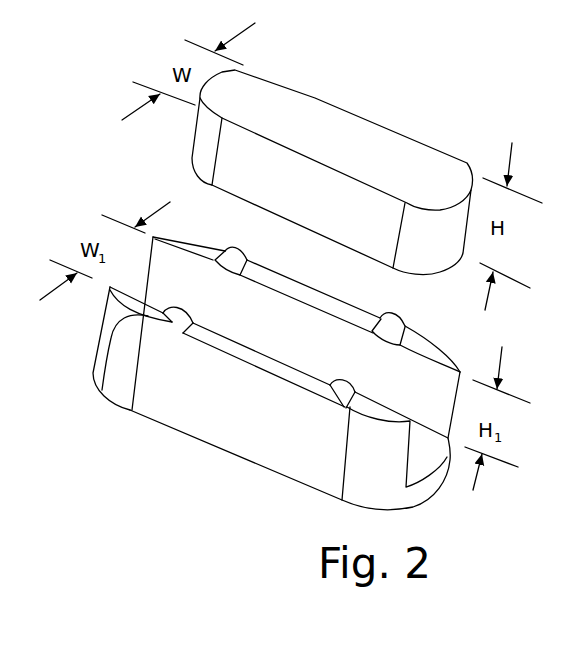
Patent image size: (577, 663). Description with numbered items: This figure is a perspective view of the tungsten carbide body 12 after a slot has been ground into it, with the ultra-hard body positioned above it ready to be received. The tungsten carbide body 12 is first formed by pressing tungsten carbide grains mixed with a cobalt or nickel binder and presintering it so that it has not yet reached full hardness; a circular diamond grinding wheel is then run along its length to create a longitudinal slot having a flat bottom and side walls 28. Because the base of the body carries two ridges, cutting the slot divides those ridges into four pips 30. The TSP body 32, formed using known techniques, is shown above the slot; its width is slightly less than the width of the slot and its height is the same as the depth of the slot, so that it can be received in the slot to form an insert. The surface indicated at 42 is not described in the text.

The tungsten carbide body 12 is at (254, 363).
The side walls 28 is at (282, 413).
The pips 30 is at (238, 250).
The TSP body 32 is at (332, 155).
The top surface 42 is at (303, 188).